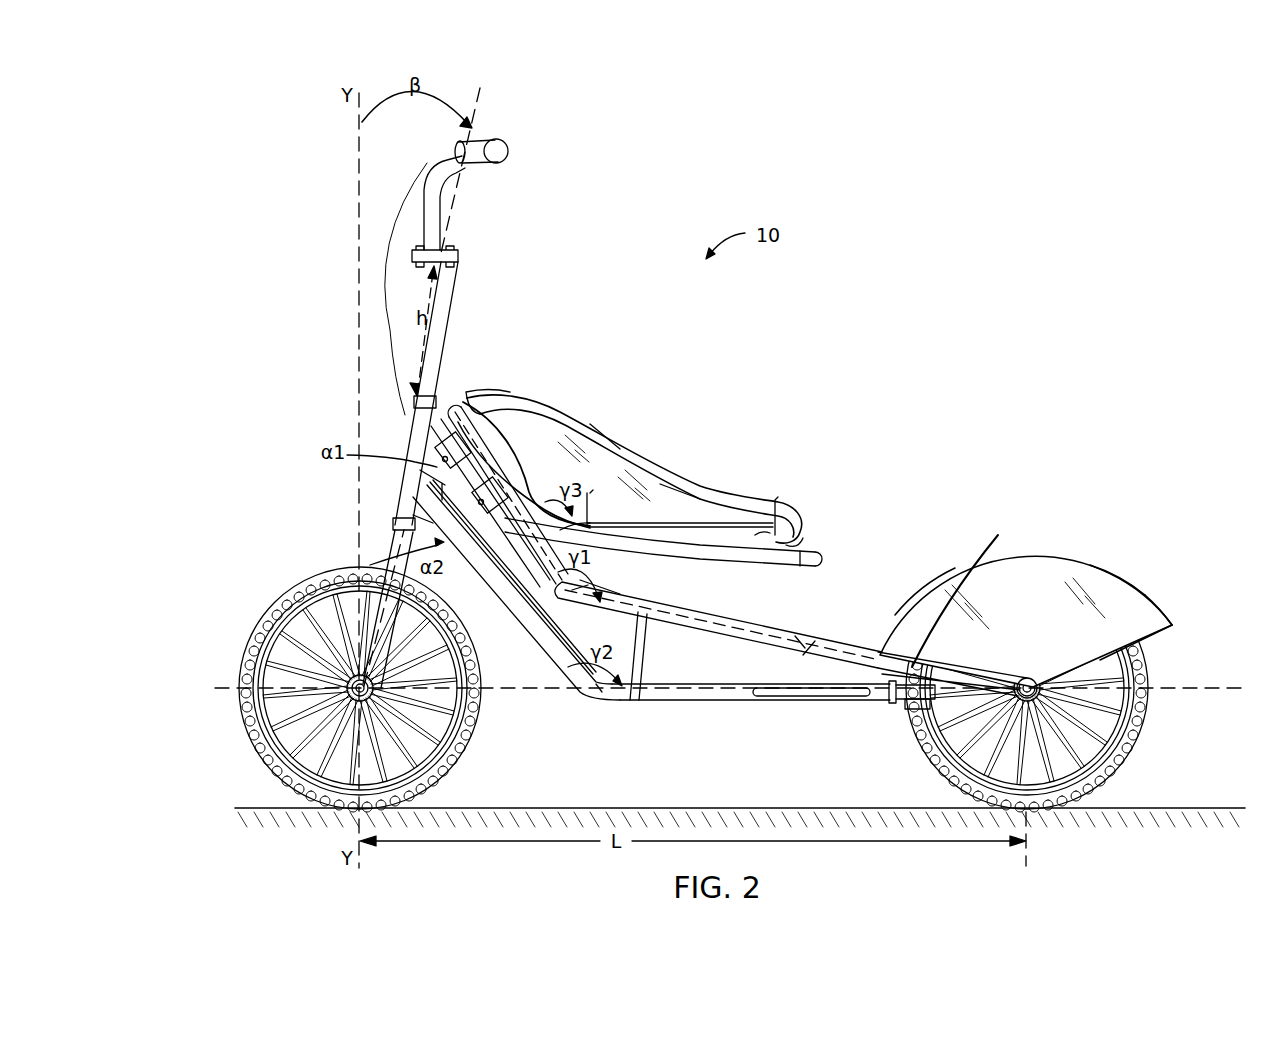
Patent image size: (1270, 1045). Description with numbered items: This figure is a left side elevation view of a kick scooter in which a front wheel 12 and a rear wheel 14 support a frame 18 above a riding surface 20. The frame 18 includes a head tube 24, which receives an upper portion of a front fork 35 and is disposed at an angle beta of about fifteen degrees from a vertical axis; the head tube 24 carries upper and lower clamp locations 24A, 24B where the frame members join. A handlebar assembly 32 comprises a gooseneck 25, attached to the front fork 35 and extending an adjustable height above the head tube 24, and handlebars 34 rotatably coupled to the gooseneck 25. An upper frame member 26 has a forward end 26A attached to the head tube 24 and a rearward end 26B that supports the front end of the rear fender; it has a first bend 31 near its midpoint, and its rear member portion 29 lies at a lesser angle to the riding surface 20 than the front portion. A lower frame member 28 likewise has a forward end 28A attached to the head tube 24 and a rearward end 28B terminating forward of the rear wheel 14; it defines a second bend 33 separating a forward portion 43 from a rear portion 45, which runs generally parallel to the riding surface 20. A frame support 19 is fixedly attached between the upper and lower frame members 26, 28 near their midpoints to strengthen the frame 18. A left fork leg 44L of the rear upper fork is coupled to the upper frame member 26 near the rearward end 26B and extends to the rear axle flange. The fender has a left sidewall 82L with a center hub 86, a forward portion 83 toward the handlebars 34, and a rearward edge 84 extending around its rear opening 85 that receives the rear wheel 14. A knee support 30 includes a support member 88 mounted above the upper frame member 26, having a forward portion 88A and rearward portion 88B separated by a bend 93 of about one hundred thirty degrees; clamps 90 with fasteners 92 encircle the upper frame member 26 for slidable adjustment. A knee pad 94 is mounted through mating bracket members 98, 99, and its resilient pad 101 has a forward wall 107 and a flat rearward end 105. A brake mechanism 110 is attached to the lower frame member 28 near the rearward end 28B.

The front wheel 12 is at (272, 605).
The rear wheel 14 is at (1141, 727).
The frame 18 is at (654, 629).
The frame support 19 is at (645, 633).
The riding surface 20 is at (1222, 806).
The head tube 24 is at (425, 440).
The upper column clamp 24A is at (418, 413).
The lower column clamp 24B is at (405, 524).
The gooseneck 25 is at (455, 283).
The upper frame member 26 is at (707, 610).
The forward end of the upper frame member 26A is at (443, 402).
The rearward end of the upper frame member 26B is at (867, 650).
The lower frame member 28 is at (661, 703).
The forward end of the lower frame member 28A is at (430, 528).
The rearward end of the lower frame member 28B is at (843, 692).
The rear member portion 29 is at (800, 637).
The knee support 30 is at (669, 441).
The first bend 31 is at (583, 571).
The handlebar assembly 32 is at (492, 202).
The second bend 33 is at (605, 688).
The handlebars 34 is at (440, 162).
The front fork 35 is at (395, 561).
The forward portion of the lower frame member 43 is at (533, 638).
The left fork leg 44L is at (998, 540).
The rear portion of the lower frame member 45 is at (713, 695).
The left sidewall 82L is at (1017, 639).
The forward portion of the fender 83 is at (942, 596).
The rearward edge 84 is at (1175, 626).
The rear opening 85 is at (1153, 633).
The center hub 86 is at (1105, 592).
The support member 88 is at (735, 550).
The forward portion of the support member 88A is at (577, 418).
The rearward portion of the support member 88B is at (667, 548).
The clamps 90 is at (520, 488).
The fasteners 92 is at (482, 510).
The bend 93 is at (557, 507).
The knee pad 94 is at (680, 502).
The bracket members 98 is at (595, 488).
The bracket members 99 is at (590, 528).
The resilient pad 101 is at (603, 442).
The rearward end 105 is at (803, 523).
The forward wall 107 is at (537, 404).
The brake mechanism 110 is at (910, 706).